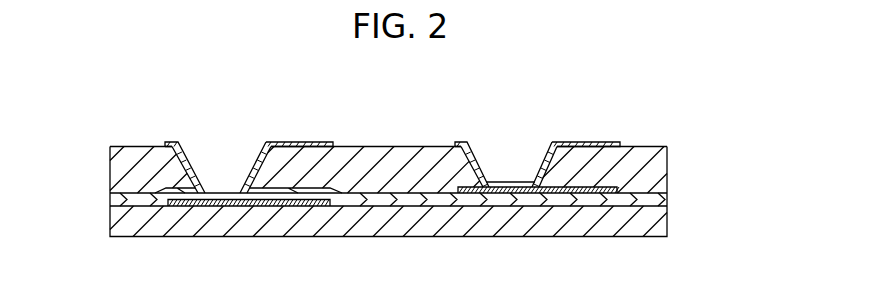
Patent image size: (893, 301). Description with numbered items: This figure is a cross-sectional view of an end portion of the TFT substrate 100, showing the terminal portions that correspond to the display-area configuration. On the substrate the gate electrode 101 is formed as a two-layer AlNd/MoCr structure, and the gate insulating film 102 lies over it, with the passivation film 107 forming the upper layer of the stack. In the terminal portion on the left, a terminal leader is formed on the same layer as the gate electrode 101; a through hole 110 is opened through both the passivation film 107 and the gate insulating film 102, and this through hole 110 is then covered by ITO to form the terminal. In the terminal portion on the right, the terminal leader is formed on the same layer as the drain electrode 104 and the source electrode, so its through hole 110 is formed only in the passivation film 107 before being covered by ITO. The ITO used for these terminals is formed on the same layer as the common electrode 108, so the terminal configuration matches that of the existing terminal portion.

The TFT substrate 100 is at (667, 218).
The gate electrode 101 is at (213, 205).
The gate insulating film 102 is at (667, 195).
The drain electrode 104 is at (502, 194).
The passivation film 107 is at (667, 160).
The common electrode 108 is at (597, 142).
The through hole 110 is at (224, 156).